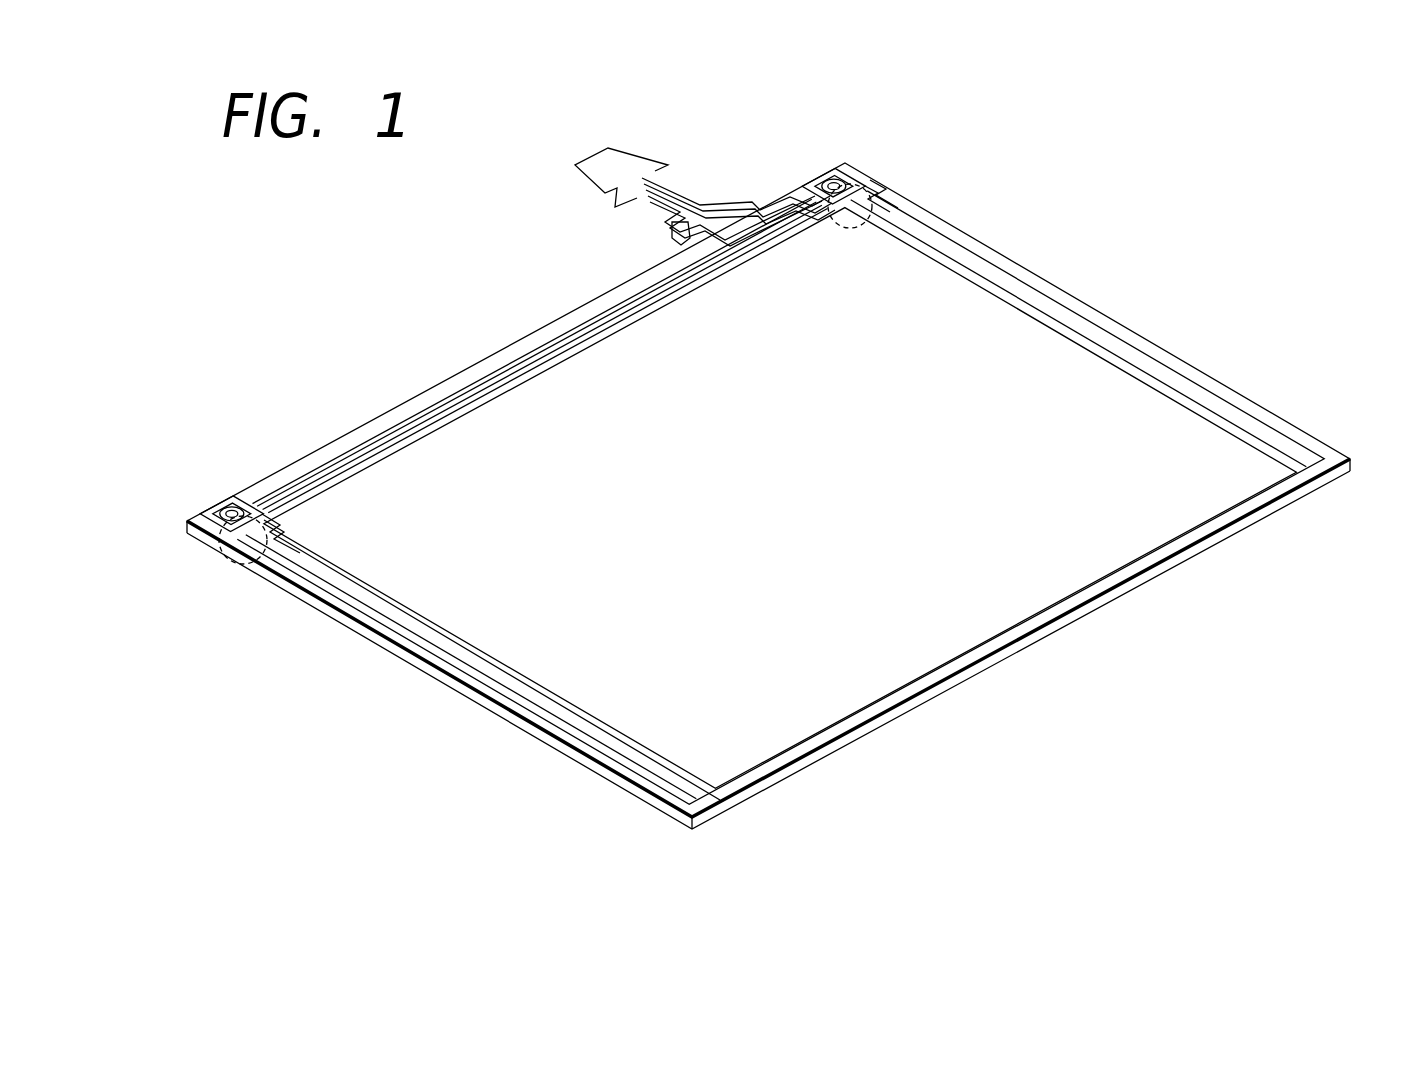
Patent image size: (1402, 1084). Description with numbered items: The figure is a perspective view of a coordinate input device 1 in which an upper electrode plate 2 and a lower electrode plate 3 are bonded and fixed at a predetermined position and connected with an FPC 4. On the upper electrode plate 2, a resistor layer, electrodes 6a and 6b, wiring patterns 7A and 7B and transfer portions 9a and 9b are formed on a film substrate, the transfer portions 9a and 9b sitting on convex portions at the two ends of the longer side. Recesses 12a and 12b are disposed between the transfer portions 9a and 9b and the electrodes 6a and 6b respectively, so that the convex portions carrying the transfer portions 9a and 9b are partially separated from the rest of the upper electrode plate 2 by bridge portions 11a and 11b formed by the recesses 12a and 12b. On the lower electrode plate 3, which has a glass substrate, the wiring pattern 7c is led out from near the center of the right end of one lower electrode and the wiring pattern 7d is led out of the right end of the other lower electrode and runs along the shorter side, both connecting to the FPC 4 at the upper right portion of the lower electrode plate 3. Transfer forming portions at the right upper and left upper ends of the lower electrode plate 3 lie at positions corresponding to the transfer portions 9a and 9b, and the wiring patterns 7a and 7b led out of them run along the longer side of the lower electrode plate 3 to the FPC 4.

The coordinate input device 1 is at (1030, 787).
The upper electrode plate 2 is at (1102, 378).
The lower electrode plate 3 is at (1218, 537).
The FPC 4 is at (618, 166).
The electrode 6a is at (1027, 300).
The electrode 6b is at (495, 665).
The wiring pattern 7a is at (750, 198).
The wiring pattern 7b is at (500, 368).
The wiring pattern 7c is at (668, 235).
The wiring pattern 7d is at (778, 198).
The wiring pattern 7A is at (858, 172).
The wiring pattern 7B is at (264, 505).
The transfer portion 9a is at (833, 165).
The transfer portion 9b is at (228, 500).
The bridge portion 11a is at (850, 228).
The bridge portion 11b is at (268, 562).
The recess 12a is at (882, 192).
The recess 12b is at (232, 540).